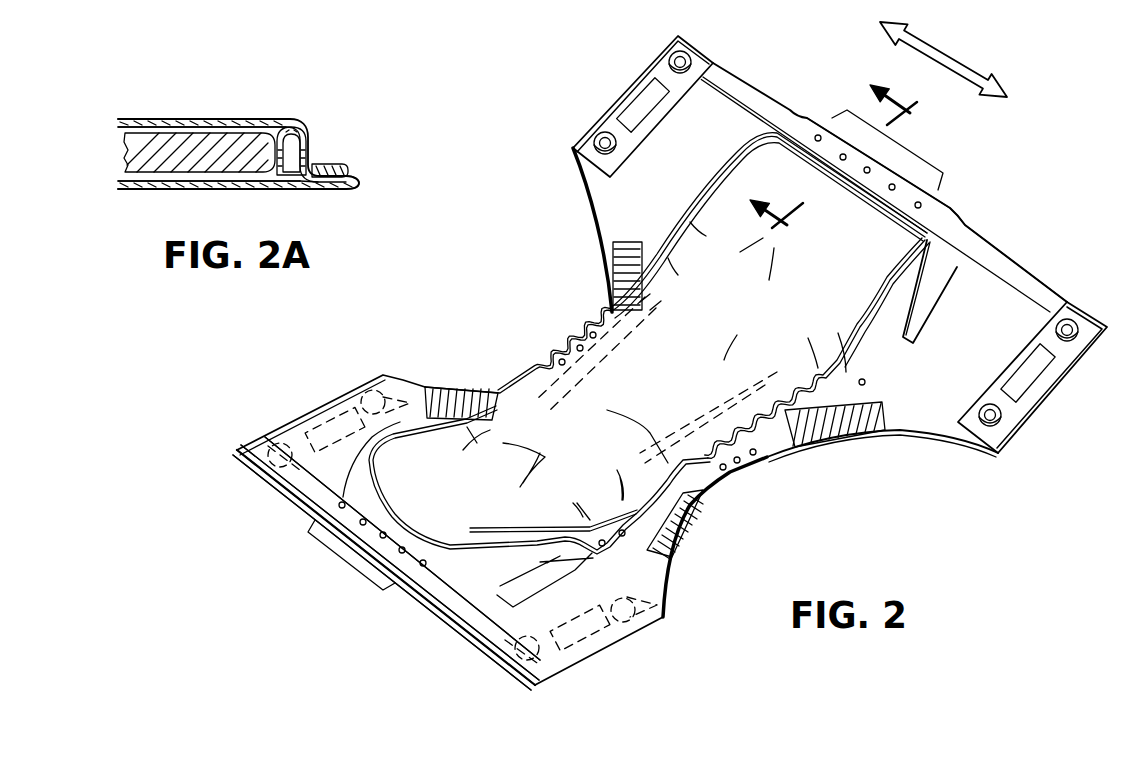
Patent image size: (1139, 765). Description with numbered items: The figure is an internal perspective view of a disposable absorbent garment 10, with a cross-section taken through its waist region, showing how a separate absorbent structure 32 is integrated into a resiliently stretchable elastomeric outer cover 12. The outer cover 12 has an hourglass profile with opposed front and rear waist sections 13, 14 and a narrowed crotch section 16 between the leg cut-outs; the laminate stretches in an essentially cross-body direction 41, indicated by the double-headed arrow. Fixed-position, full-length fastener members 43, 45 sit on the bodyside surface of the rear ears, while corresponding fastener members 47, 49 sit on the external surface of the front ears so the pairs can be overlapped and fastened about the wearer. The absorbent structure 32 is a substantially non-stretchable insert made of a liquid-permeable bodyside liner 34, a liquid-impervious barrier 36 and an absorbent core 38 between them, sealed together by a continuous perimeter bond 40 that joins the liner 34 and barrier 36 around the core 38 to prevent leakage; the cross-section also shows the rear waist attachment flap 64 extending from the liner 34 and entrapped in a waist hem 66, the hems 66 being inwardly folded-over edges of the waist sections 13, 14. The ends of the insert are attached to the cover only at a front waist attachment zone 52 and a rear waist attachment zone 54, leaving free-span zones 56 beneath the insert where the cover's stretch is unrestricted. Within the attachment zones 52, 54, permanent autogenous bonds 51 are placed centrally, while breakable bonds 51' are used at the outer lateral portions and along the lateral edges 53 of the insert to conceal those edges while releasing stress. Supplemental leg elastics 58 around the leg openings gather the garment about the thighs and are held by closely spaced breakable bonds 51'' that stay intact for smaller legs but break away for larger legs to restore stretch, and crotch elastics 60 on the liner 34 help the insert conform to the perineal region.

In FIG. 2, the disposable absorbent garment 10 is at (1069, 102).
In FIG. 2, the elastomeric outer cover 12 is at (976, 289).
In FIG. 2, the front waist section 13 is at (438, 606).
In FIG. 2, the rear waist section 14 is at (953, 213).
In FIG. 2, the crotch section 16 is at (577, 326).
In FIG. 2A, the absorbent structure 32 is at (268, 77).
In FIG. 2, the absorbent structure 32 is at (723, 195).
In FIG. 2A, the bodyside liner 34 is at (215, 119).
In FIG. 2, the bodyside liner 34 is at (503, 393).
In FIG. 2A, the liquid-impervious barrier 36 is at (277, 188).
In FIG. 2A, the absorbent core 38 is at (122, 150).
In FIG. 2A, the perimeter bond 40 is at (291, 119).
In FIG. 2, the perimeter bond 40 is at (860, 313).
In FIG. 2, the cross-body direction 41 is at (947, 52).
In FIG. 2, the fastener member 43 is at (627, 82).
In FIG. 2, the fastener member 45 is at (1068, 376).
In FIG. 2, the fastener member 47 is at (245, 465).
In FIG. 2, the fastener member 49 is at (606, 655).
In FIG. 2A, the permanent autogenous bonds 51 is at (344, 145).
In FIG. 2, the permanent autogenous bonds 51 is at (627, 353).
In FIG. 2, the breakable autogenous bonds 51' is at (632, 350).
In FIG. 2, the breakable bonds 51'' is at (657, 423).
In FIG. 2, the front waist attachment zone 52 is at (347, 568).
In FIG. 2, the lateral edges 53 is at (610, 313).
In FIG. 2, the rear waist attachment zone 54 is at (902, 142).
In FIG. 2, the free-span zone 56 is at (598, 572).
In FIG. 2, the supplemental leg elastics 58 is at (614, 252).
In FIG. 2, the crotch elastics 60 is at (677, 303).
In FIG. 2A, the rear waist attachment flap 64 is at (294, 189).
In FIG. 2A, the waist hems 66 is at (360, 182).
In FIG. 2, the waist hems 66 is at (745, 77).